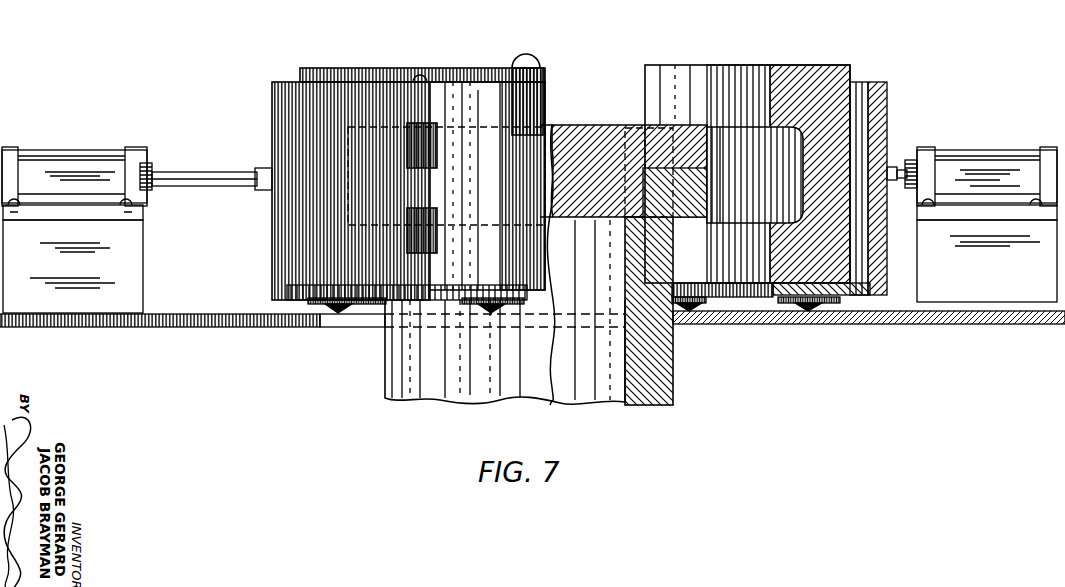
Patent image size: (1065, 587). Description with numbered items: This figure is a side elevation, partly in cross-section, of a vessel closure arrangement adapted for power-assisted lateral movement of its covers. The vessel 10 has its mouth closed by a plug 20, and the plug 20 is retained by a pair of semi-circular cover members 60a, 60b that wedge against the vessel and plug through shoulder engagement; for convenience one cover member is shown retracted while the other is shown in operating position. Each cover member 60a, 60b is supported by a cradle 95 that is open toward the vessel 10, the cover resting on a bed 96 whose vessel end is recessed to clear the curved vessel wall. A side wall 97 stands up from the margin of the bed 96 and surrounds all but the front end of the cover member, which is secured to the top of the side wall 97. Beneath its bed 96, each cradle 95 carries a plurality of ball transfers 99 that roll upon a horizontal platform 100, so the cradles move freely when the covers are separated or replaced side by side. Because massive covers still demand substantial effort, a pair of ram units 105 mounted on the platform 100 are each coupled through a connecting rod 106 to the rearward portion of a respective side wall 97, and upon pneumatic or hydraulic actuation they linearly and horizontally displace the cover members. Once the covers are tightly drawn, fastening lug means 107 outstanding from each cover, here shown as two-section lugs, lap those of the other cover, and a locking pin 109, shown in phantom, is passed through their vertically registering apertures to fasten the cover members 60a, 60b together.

The vessel 10 is at (673, 376).
The plug 20 is at (578, 124).
The cover member 60a is at (441, 68).
The cover member 60b is at (801, 73).
The cradle 95 is at (610, 175).
The bed 96 is at (862, 324).
The side wall 97 is at (272, 232).
The ball transfers 99 is at (340, 316).
The horizontal platform 100 is at (530, 330).
The ram unit 105 is at (76, 155).
The connecting rod 106 is at (205, 166).
The fastening lug means 107 is at (548, 90).
The locking pin 109 is at (527, 57).